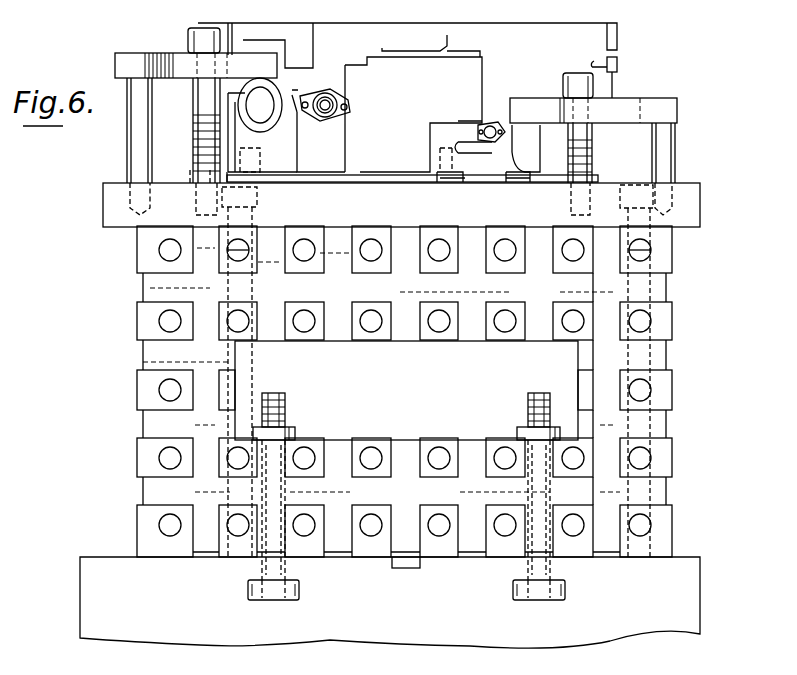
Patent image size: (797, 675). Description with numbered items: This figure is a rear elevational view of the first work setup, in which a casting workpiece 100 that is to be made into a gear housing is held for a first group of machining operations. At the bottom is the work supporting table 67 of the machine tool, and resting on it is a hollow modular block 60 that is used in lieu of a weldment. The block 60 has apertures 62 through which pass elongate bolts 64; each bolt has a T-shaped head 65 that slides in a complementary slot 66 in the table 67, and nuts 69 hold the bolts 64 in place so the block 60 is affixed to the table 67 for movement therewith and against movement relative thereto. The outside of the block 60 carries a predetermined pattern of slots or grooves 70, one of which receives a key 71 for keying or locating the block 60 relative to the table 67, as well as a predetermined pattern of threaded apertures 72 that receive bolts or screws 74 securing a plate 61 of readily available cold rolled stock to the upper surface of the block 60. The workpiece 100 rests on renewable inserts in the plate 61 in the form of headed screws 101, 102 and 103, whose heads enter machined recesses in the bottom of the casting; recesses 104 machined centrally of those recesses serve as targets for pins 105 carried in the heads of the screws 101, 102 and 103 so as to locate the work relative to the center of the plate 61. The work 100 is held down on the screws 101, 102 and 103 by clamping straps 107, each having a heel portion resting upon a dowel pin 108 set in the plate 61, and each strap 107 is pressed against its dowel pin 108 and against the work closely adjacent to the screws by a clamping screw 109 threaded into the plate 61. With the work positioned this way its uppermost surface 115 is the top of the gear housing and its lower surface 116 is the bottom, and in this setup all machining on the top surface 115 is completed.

The modular block 60 is at (684, 319).
The plate 61 is at (710, 194).
The apertures 62 is at (287, 452).
The elongate bolts 64 is at (283, 400).
The T-shaped heads 65 is at (293, 587).
The slots 66 is at (283, 600).
The work supporting table 67 is at (178, 620).
The nuts 69 is at (291, 437).
The slots or grooves 70 is at (218, 400).
The key 71 is at (407, 566).
The threaded apertures 72 is at (235, 313).
The bolts or screws 74 is at (228, 234).
The workpiece 100 is at (477, 20).
The headed screw 101 is at (277, 178).
The headed screw 102 is at (427, 177).
The headed screw 103 is at (191, 176).
The recesses 104 is at (252, 158).
The pins 105 is at (255, 165).
The clamping straps 107 is at (164, 60).
The dowel pins 108 is at (136, 146).
The clamping screws 109 is at (205, 97).
The uppermost surface 115 is at (537, 23).
The lower surface 116 is at (333, 177).